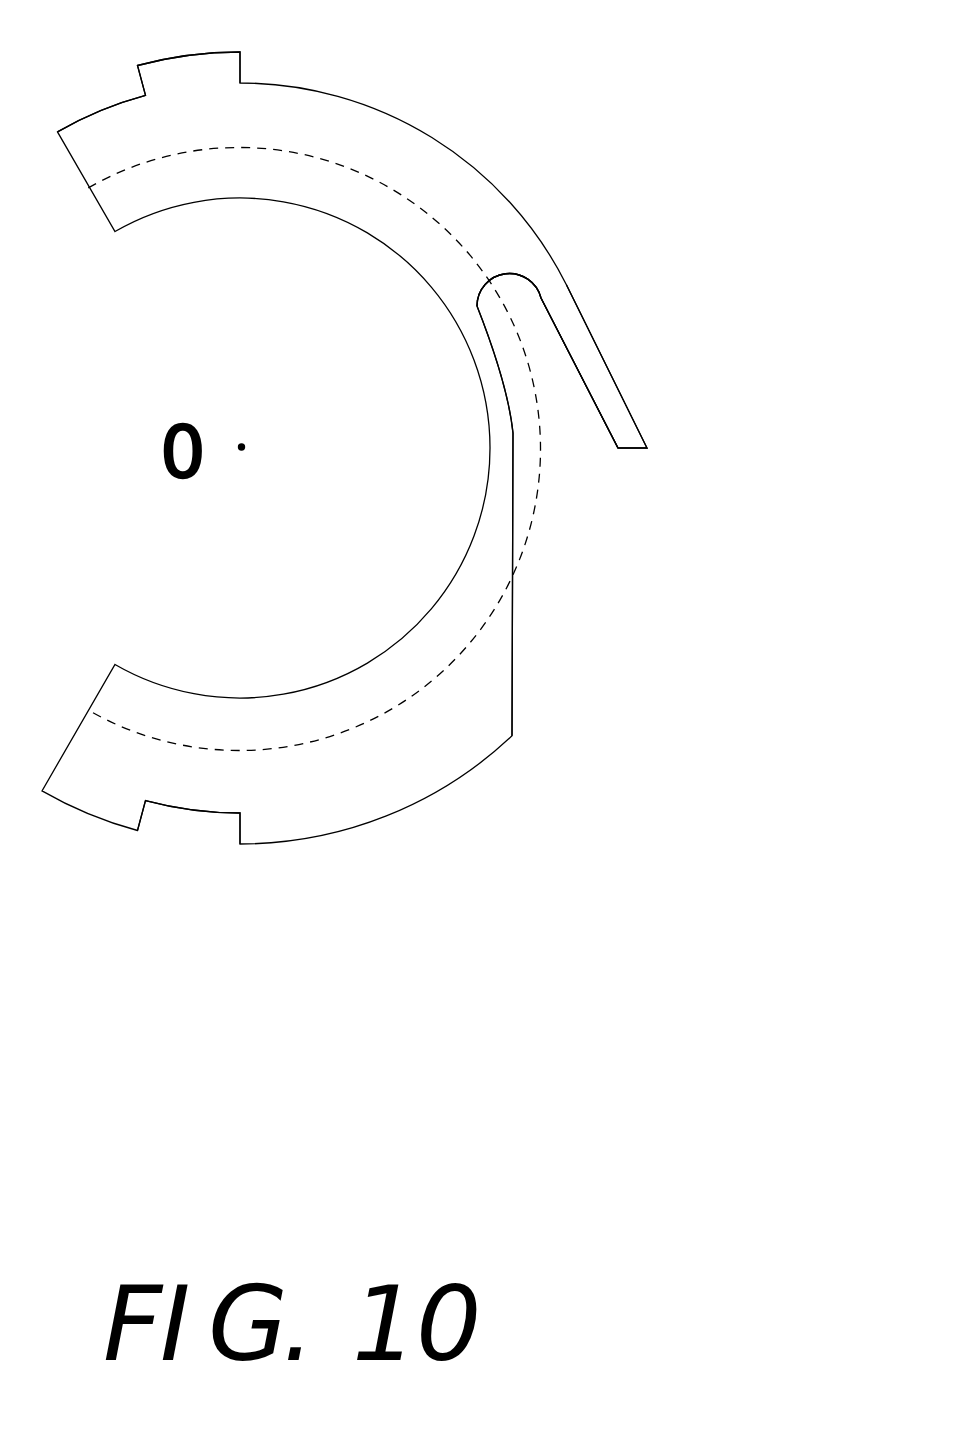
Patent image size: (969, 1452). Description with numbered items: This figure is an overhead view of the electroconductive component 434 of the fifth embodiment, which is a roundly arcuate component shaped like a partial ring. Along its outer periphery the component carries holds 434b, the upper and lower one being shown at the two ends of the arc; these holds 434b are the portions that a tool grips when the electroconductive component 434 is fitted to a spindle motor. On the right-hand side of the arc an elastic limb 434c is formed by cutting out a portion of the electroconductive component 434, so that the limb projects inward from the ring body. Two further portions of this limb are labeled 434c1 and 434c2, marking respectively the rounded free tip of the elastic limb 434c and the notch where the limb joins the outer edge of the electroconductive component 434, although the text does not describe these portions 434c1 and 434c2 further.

The electroconductive component 434 is at (545, 203).
The holds 434b is at (178, 330).
The elastic limb 434c is at (607, 630).
The hook tip portion 434c1 is at (483, 265).
The hook base notch 434c2 is at (607, 571).